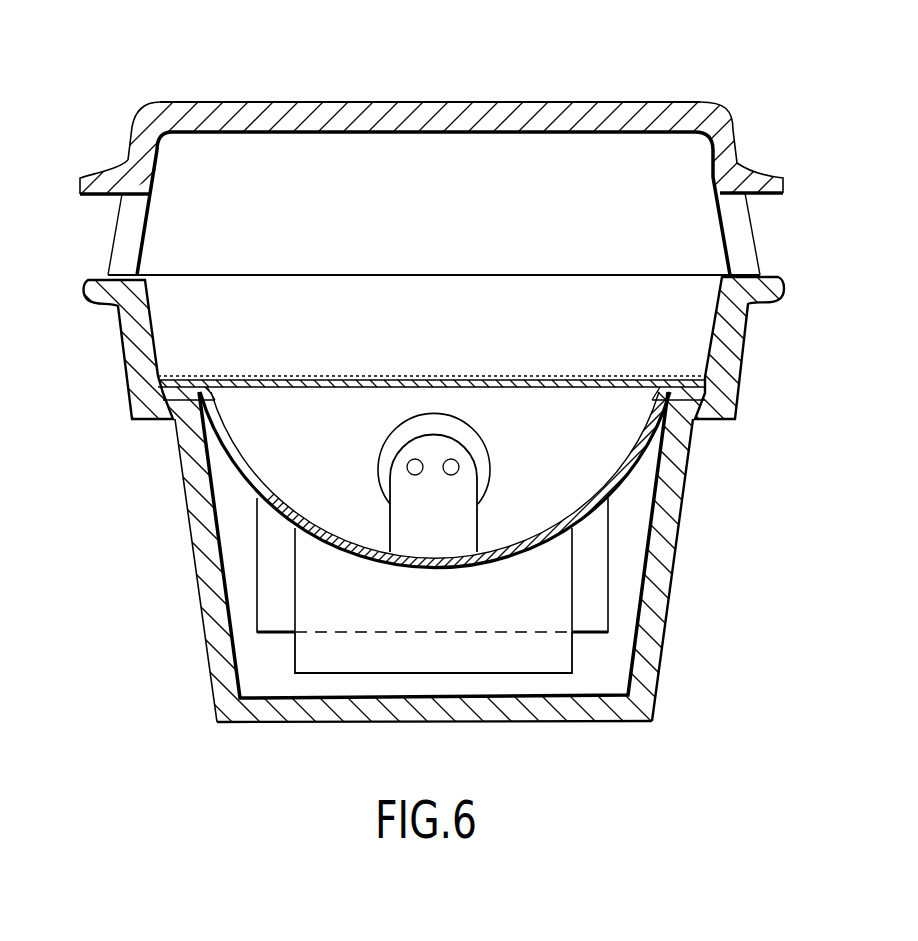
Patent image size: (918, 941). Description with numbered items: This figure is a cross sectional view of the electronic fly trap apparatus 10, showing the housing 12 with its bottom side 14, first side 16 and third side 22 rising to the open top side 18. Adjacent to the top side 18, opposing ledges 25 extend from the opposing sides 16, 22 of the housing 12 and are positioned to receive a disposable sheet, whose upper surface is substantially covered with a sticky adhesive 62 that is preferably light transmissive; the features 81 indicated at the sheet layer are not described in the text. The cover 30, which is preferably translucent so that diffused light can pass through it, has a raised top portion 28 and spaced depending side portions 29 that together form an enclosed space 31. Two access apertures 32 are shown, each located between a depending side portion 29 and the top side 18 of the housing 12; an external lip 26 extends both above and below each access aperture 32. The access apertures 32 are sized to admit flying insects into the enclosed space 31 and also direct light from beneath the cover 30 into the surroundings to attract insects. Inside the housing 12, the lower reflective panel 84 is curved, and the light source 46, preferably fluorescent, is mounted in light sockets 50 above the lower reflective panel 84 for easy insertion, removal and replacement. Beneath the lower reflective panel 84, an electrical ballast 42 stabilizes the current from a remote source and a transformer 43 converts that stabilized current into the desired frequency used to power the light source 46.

The electronic fly trap apparatus 10 is at (123, 87).
The housing 12 is at (197, 595).
The bottom side 14 is at (518, 722).
The first side 16 is at (208, 676).
The top side 18 is at (538, 274).
The third side 22 is at (679, 565).
The opposing ledges 25 is at (158, 420).
The external lip 26 is at (100, 172).
The raised top portion 28 is at (688, 100).
The depending side portions 29 is at (157, 182).
The cover 30 is at (436, 101).
The enclosed space 31 is at (441, 228).
The access aperture 32 is at (100, 258).
The electrical ballast 42 is at (609, 600).
The transformer 43 is at (370, 674).
The light source 46 is at (485, 437).
The light sockets 50 is at (480, 512).
The sticky adhesive 62 is at (260, 376).
The perforations 81 is at (277, 388).
The lower reflective panel 84 is at (602, 472).